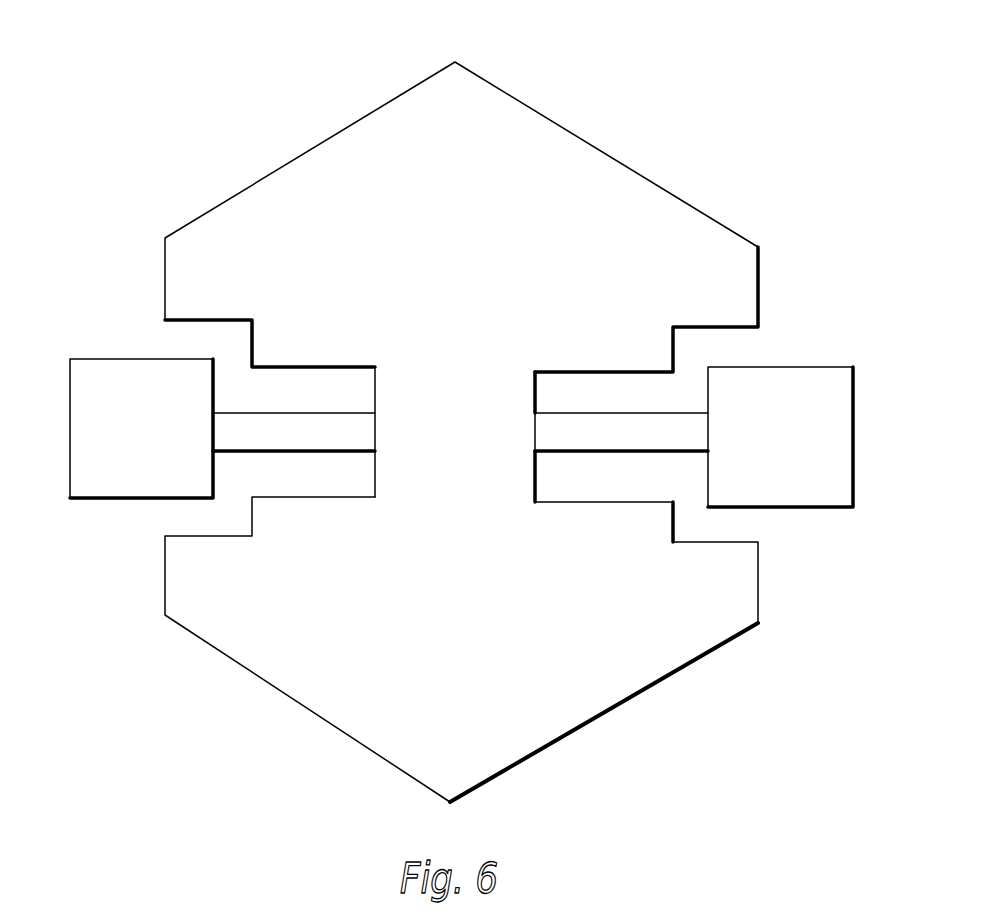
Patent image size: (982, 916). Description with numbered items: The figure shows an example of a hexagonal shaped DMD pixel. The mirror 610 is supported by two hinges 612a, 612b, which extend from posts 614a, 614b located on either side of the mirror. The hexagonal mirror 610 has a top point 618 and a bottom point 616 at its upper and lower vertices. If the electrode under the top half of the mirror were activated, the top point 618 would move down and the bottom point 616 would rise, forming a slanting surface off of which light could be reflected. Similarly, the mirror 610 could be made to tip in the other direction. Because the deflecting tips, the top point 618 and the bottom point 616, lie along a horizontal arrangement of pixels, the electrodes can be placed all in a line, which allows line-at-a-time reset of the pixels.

The top point of the mirror 618 is at (455, 62).
The bottom point 616 is at (450, 802).
The mirror 610 is at (485, 450).
The hinge 612a is at (617, 427).
The hinge 612b is at (295, 420).
The post 614a is at (820, 465).
The post 614b is at (175, 460).